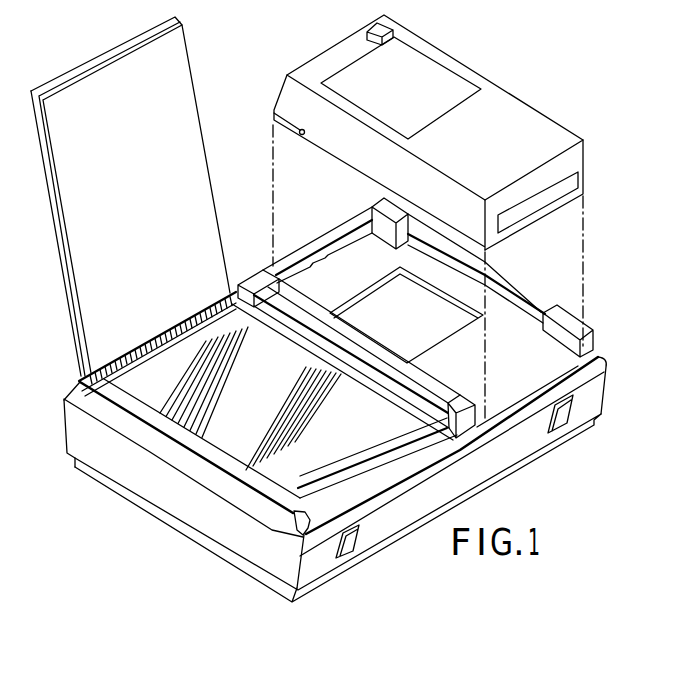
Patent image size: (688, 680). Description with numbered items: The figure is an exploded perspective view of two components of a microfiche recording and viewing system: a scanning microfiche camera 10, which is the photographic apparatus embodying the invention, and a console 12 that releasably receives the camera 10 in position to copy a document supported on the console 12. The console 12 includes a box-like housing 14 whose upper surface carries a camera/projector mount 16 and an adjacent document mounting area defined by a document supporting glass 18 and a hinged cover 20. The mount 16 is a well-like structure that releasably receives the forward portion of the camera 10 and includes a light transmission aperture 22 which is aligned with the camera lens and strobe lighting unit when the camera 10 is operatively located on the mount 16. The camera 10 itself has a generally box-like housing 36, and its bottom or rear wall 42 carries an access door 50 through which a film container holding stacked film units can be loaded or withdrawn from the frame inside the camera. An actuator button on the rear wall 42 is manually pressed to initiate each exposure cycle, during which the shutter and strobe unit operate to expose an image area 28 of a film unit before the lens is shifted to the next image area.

The scanning microfiche camera 10 is at (556, 102).
The console 12 is at (285, 611).
The box-like housing 14 is at (178, 532).
The camera/projector mount 16 is at (534, 366).
The document supporting glass 18 is at (153, 388).
The hinged cover 20 is at (62, 213).
The light transmission aperture 22 is at (371, 309).
The image area 28 is at (378, 23).
The camera housing 36 is at (585, 142).
The rear wall 42 is at (463, 66).
The access door 50 is at (423, 77).